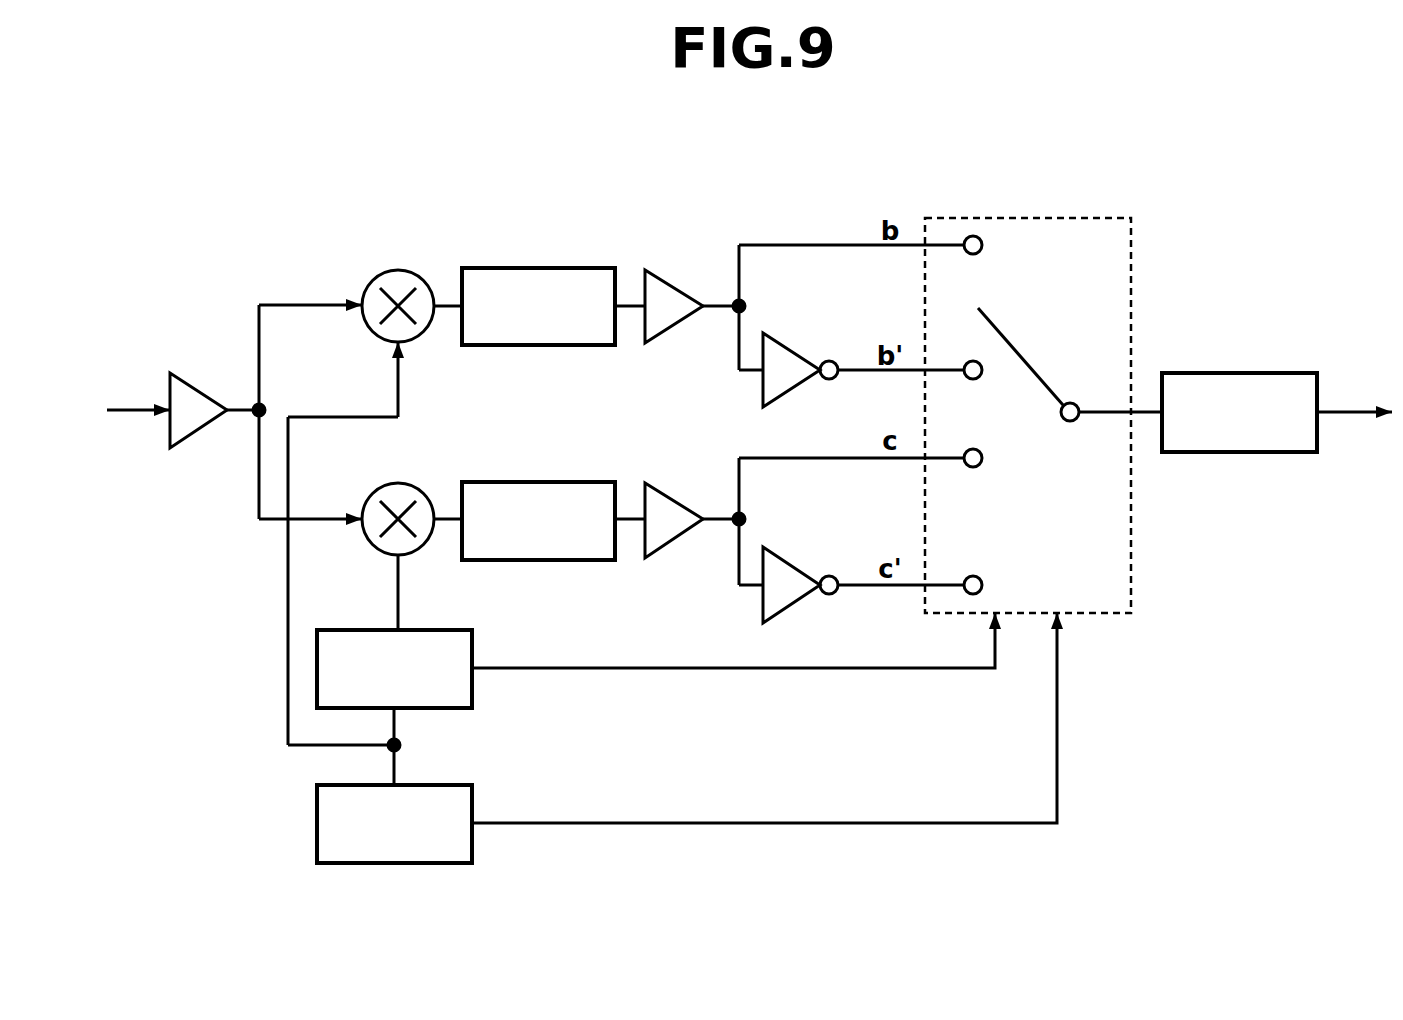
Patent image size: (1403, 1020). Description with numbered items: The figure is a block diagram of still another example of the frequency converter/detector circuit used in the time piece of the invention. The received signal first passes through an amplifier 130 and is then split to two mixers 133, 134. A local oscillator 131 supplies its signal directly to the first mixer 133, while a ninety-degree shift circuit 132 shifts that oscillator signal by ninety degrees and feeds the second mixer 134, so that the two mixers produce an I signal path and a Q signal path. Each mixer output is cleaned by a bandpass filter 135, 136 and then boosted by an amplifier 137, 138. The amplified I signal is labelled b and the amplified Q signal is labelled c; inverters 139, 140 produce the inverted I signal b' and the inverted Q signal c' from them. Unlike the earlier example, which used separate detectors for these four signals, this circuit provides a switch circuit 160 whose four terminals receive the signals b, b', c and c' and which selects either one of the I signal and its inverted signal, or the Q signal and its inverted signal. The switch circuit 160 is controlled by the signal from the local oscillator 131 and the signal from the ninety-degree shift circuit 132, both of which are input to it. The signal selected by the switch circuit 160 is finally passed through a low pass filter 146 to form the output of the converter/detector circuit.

The amplifier 130 is at (180, 375).
The local oscillator 131 is at (427, 785).
The 90-deg shift circuit 132 is at (427, 630).
The mixer 133 is at (393, 272).
The mixer 134 is at (410, 485).
The bandpass filter 135 is at (540, 268).
The bandpass filter 136 is at (540, 482).
The amplifier 137 is at (667, 283).
The amplifier 138 is at (667, 493).
The inverter 139 is at (792, 347).
The inverter 140 is at (792, 562).
The low pass filter 146 is at (1240, 373).
The switch circuit 160 is at (1133, 298).